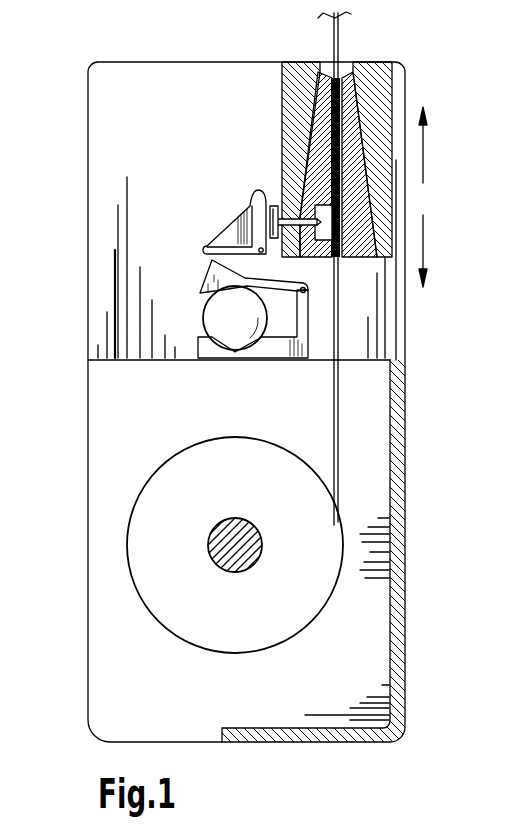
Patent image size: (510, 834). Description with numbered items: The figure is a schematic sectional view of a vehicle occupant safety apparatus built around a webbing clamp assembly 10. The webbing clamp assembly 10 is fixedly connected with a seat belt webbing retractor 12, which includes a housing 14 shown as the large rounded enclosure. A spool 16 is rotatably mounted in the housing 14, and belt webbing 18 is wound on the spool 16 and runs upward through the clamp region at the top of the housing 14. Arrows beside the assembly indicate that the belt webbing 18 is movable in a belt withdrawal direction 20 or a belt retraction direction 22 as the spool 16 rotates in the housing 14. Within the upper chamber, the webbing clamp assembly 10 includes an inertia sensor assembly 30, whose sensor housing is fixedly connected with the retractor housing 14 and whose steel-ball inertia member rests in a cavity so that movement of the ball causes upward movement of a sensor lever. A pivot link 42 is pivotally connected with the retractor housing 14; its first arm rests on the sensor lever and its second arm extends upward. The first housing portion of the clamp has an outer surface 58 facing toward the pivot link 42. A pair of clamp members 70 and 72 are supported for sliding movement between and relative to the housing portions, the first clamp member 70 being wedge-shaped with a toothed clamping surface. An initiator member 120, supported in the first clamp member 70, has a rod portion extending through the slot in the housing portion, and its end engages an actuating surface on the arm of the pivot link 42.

The webbing clamp assembly 10 is at (222, 145).
The seat belt webbing retractor 12 is at (84, 698).
The housing 14 is at (407, 705).
The spool 16 is at (127, 557).
The belt webbing 18 is at (340, 409).
The belt withdrawal direction 20 is at (423, 150).
The belt retraction direction 22 is at (423, 222).
The inertia sensor assembly 30 is at (190, 308).
The pivot link 42 is at (233, 217).
The outer surface 58 is at (501, 257).
The first clamp member 70 is at (313, 110).
The second clamp member 72 is at (357, 118).
The initiator member 120 is at (297, 210).